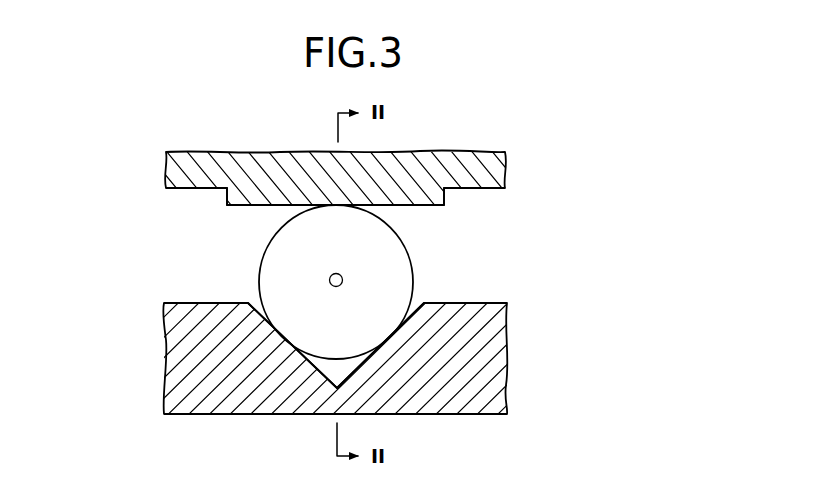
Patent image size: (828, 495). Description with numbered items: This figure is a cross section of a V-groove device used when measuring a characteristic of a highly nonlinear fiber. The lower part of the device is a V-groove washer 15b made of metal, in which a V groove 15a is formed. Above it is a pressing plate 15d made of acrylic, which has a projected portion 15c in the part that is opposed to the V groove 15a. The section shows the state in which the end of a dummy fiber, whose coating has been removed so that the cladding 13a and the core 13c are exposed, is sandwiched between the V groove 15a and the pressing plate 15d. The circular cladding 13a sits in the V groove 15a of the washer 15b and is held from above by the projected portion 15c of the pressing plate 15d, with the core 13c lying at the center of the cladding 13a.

The pressing plate 15d is at (182, 165).
The projected portion 15c is at (222, 197).
The cladding 13a is at (287, 252).
The core 13c is at (330, 280).
The V groove 15a is at (331, 377).
The V-groove washer 15b is at (173, 392).